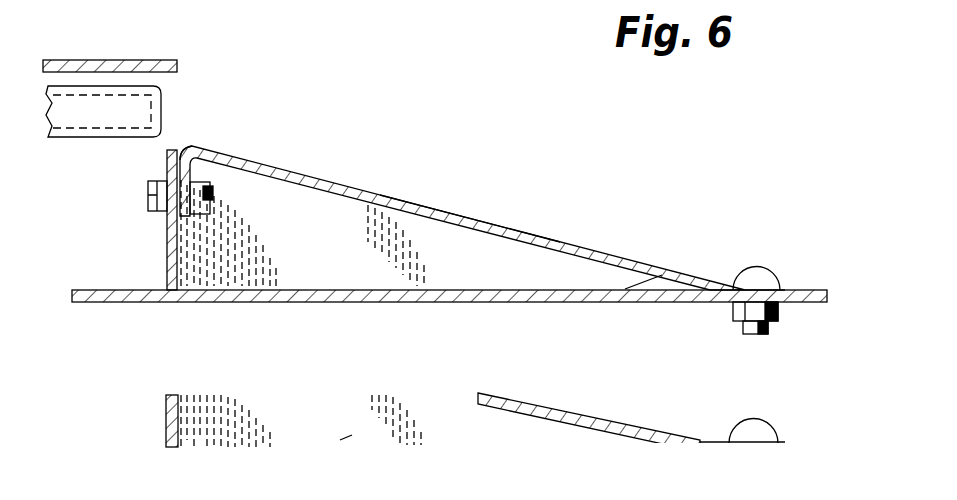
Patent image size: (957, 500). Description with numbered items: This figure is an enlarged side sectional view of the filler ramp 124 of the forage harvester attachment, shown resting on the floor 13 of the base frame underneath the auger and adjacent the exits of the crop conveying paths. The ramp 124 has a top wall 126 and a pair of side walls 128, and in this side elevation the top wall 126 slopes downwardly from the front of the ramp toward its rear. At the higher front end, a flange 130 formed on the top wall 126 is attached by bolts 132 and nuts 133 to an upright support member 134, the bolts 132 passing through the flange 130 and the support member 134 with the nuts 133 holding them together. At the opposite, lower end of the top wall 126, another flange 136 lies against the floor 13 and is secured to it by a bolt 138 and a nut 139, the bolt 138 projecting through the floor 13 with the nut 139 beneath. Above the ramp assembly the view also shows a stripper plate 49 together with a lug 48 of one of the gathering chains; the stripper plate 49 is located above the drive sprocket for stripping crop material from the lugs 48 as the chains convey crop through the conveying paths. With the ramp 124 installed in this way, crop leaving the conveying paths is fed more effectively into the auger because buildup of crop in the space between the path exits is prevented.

The floor 13 is at (582, 303).
The lug 48 is at (160, 109).
The stripper plate 49 is at (160, 60).
The filler ramp 124 is at (350, 183).
The top wall 126 is at (463, 215).
The side wall 128 is at (352, 273).
The flange 130 is at (180, 158).
The bolt 132 is at (148, 196).
The nut 133 is at (200, 214).
The support member 134 is at (166, 247).
The flange 136 is at (786, 287).
The bolt 138 is at (757, 272).
The nut 139 is at (781, 316).